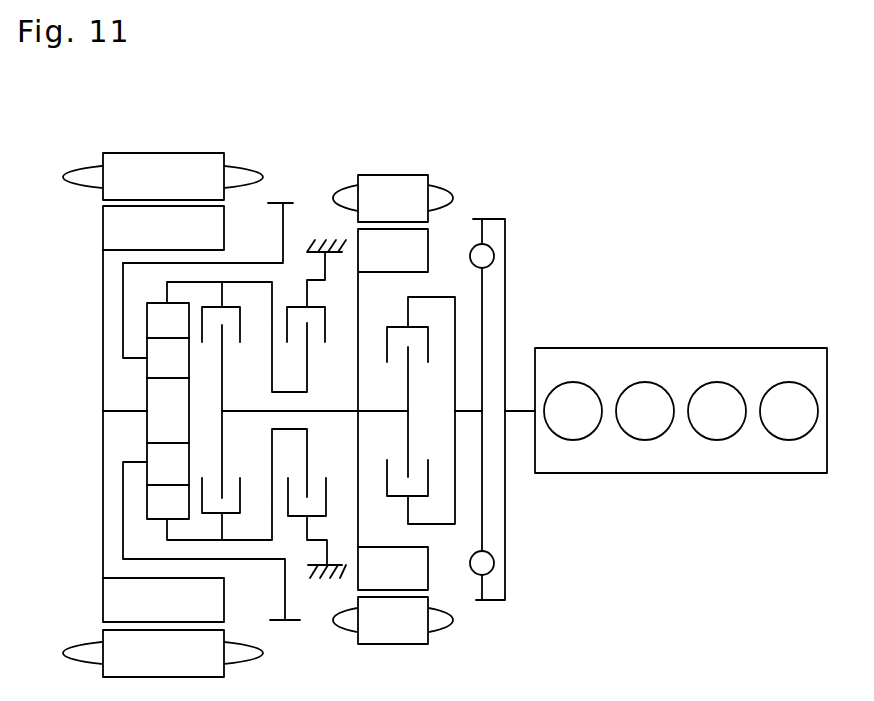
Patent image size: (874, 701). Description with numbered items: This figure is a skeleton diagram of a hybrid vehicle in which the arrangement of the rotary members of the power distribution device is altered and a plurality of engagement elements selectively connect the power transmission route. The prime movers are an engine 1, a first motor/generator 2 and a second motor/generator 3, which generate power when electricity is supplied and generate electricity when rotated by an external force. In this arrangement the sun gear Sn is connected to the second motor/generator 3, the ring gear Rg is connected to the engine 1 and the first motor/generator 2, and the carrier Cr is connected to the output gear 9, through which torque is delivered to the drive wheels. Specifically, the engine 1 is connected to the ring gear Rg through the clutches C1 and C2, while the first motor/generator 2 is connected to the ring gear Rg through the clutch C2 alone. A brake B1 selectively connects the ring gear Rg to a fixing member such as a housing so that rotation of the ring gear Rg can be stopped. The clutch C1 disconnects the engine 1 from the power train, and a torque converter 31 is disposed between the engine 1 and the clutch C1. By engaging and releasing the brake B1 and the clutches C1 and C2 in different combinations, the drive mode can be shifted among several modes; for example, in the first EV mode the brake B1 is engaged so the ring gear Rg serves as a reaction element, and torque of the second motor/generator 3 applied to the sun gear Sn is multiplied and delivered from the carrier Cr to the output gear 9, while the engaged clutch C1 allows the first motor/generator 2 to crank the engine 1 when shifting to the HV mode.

The engine 1 is at (755, 347).
The first motor/generator 2 is at (462, 180).
The second motor/generator 3 is at (250, 137).
The torque converter 31 is at (522, 246).
The output gear 9 is at (291, 626).
The clutch C1 is at (382, 333).
The clutch C2 is at (253, 332).
The brake B1 is at (234, 390).
The ring gear Rg is at (160, 310).
The carrier Cr is at (123, 312).
The sun gear Sn is at (163, 427).